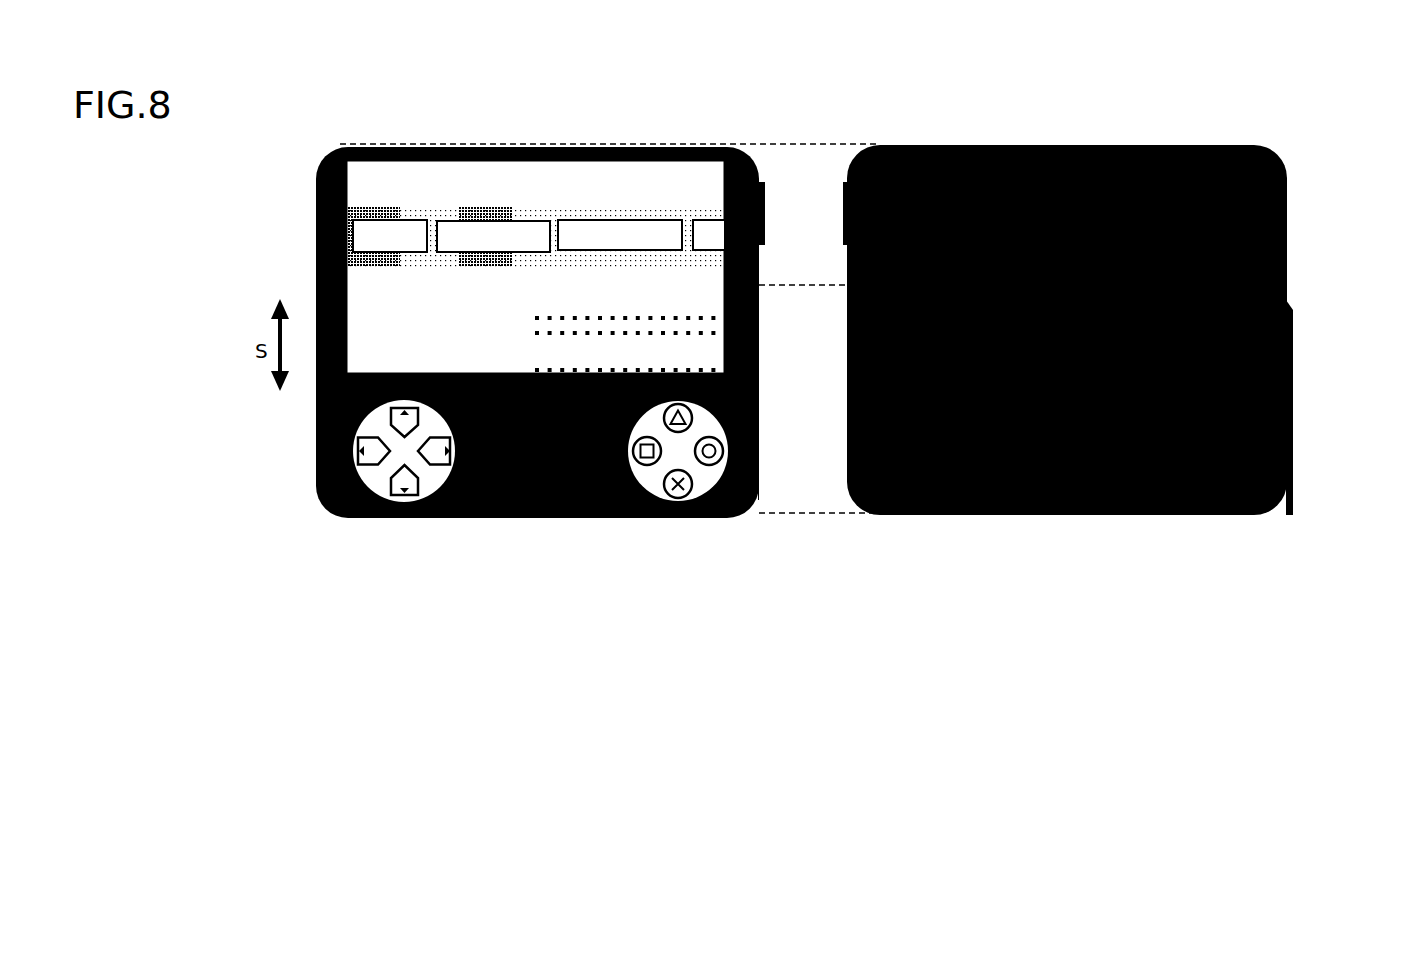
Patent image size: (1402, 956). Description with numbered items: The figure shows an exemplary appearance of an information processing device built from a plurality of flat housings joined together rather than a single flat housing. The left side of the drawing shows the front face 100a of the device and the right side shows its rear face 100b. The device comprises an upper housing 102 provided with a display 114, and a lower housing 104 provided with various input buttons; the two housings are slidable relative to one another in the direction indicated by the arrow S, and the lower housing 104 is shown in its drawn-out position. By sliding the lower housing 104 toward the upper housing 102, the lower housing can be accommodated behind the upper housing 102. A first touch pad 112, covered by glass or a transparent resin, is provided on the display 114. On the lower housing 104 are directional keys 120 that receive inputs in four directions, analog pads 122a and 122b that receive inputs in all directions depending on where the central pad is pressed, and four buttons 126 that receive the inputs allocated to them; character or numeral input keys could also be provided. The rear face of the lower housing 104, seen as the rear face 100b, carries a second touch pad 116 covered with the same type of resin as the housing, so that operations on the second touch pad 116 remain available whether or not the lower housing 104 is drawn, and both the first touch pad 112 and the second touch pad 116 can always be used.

The front face 100a is at (582, 333).
The rear face 100b is at (1105, 356).
The upper housing 102 is at (847, 257).
The lower housing 104 is at (847, 448).
The first touch pad 112 is at (567, 172).
The display 114 is at (621, 182).
The second touch pad 116 is at (1293, 388).
The directional keys 120 is at (384, 486).
The analog pad 122a is at (487, 519).
The analog pad 122b is at (600, 519).
The four buttons 126 is at (702, 483).